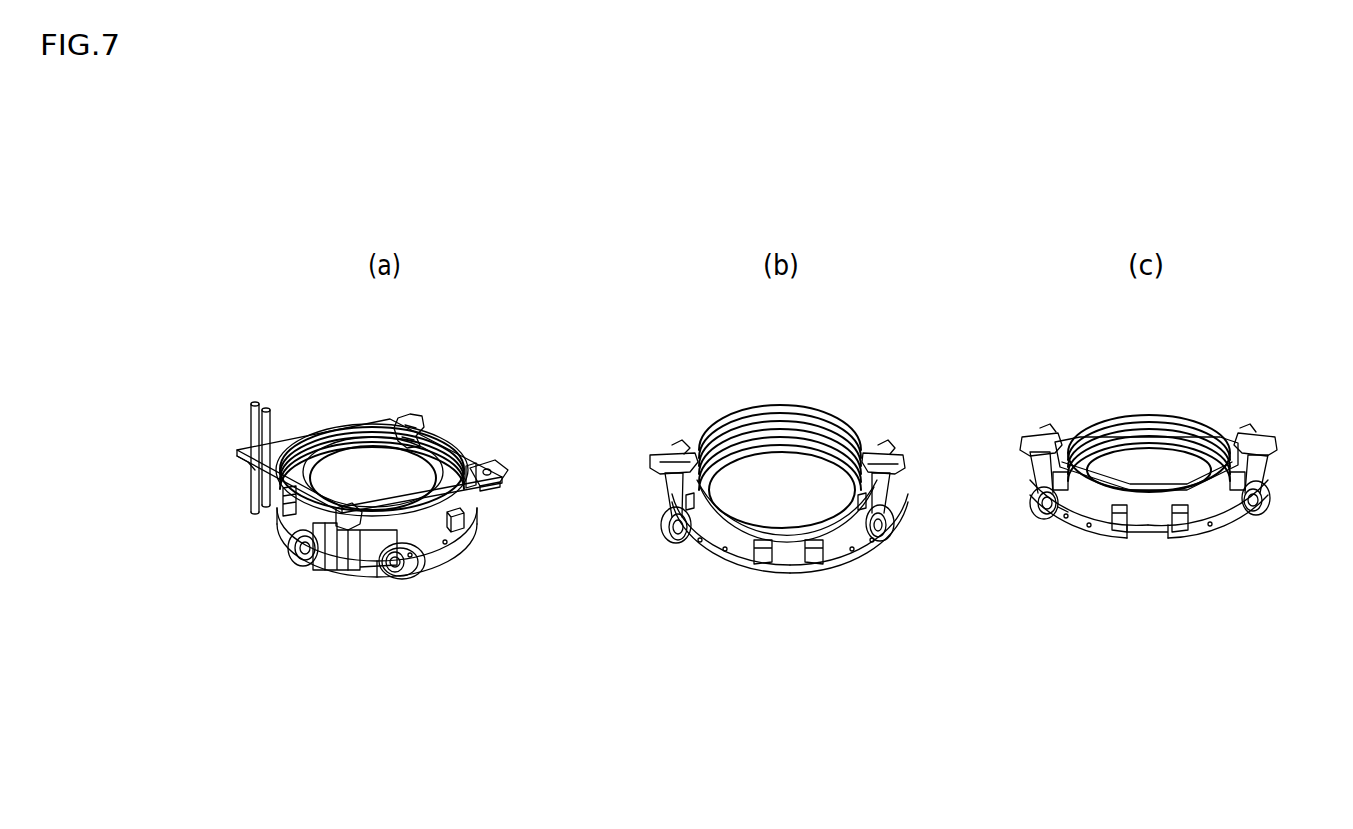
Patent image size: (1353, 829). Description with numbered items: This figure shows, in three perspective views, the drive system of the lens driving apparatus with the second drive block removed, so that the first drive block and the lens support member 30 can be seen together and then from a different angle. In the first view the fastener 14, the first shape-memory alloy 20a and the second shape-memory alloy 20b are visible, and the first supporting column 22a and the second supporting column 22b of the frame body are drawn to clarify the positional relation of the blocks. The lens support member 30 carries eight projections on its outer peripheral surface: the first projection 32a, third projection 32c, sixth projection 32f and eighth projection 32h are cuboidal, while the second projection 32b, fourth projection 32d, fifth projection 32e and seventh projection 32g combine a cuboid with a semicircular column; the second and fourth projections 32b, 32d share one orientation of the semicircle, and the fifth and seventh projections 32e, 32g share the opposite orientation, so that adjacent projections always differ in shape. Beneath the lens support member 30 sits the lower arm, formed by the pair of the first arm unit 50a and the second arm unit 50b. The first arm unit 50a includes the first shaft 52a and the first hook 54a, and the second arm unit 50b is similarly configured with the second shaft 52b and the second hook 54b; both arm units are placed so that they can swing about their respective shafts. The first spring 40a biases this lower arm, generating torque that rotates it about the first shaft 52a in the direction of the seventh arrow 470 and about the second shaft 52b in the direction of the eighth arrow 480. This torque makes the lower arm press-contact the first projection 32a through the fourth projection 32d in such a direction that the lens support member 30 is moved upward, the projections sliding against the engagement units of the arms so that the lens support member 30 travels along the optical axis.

The fastener 14 is at (503, 478).
The first shape-memory alloy 20a is at (277, 472).
The second shape-memory alloy 20b is at (460, 440).
The first supporting column 22a is at (248, 440).
The second supporting column 22b is at (262, 443).
The lens support member 30 is at (443, 443).
The first projection 32a is at (468, 517).
The second projection 32b is at (282, 503).
The third projection 32c is at (1130, 527).
The fourth projection 32d is at (480, 462).
The fifth projection 32e is at (662, 490).
The sixth projection 32f is at (892, 488).
The seventh projection 32g is at (1047, 477).
The eighth projection 32h is at (1260, 477).
The first spring 40a is at (303, 440).
The first arm unit 50a is at (450, 545).
The second arm unit 50b is at (473, 507).
The first shaft 52a is at (418, 573).
The second shaft 52b is at (892, 527).
The first hook 54a is at (343, 577).
The second hook 54b is at (397, 417).
The seventh arrow 470 is at (303, 567).
The eighth arrow 480 is at (883, 540).